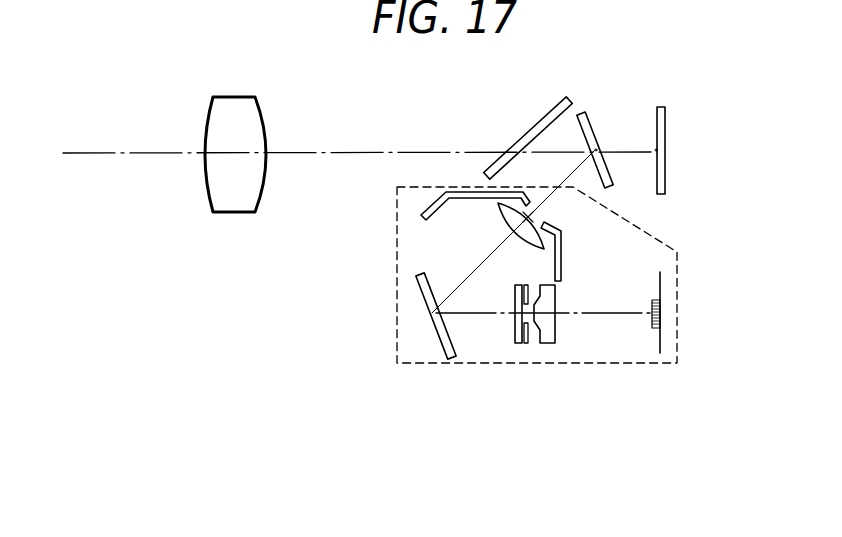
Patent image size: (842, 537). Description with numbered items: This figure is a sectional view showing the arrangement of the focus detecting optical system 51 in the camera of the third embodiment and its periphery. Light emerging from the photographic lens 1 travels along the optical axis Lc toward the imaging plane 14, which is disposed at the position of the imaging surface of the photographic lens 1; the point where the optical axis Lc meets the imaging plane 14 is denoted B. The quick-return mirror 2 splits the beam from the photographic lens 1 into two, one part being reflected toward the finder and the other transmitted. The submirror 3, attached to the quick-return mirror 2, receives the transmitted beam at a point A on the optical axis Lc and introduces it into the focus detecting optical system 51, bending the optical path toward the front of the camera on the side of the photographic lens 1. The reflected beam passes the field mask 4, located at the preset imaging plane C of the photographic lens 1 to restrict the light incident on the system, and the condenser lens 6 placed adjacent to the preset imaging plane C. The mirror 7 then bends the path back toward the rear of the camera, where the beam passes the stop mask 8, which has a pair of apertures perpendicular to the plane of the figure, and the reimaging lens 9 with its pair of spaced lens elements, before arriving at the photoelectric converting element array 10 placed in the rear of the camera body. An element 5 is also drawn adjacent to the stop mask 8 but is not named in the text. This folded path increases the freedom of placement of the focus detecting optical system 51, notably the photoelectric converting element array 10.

The photographic lens 1 is at (242, 104).
The quick-return mirror 2 is at (547, 115).
The submirror 3 is at (589, 113).
The field mask 4 is at (562, 242).
The plate 5 is at (515, 329).
The condenser lens 6 is at (504, 215).
The mirror 7 is at (440, 334).
The stop mask 8 is at (527, 346).
The reimaging lens 9 is at (549, 346).
The photoelectric converting element array 10 is at (652, 323).
The imaging plane 14 is at (665, 178).
The focus detecting optical system 51 is at (677, 308).
The optical axis Lc is at (380, 150).
The point A is at (597, 149).
The point B is at (657, 150).
The preset imaging plane C is at (533, 216).